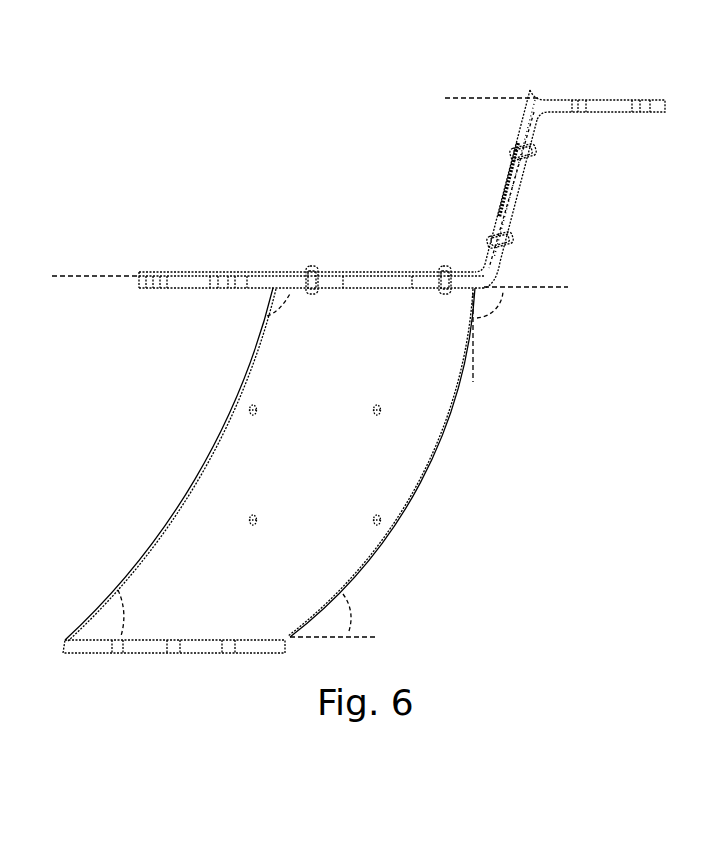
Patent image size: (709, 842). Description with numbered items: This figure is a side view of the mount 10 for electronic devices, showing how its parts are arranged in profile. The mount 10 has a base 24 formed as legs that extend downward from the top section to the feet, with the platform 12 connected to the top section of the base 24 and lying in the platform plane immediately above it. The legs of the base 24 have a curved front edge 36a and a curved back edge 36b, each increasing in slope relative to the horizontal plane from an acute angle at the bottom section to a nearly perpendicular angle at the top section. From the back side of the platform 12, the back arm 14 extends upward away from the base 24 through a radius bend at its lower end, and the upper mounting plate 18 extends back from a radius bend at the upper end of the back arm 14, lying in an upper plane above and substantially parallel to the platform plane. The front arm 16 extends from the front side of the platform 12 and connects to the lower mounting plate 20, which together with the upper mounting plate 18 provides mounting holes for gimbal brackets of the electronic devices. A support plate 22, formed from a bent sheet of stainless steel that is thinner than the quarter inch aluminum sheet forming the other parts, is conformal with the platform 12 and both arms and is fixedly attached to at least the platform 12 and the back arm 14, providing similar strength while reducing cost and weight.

The mount 10 is at (161, 172).
The platform 12 is at (330, 278).
The back arm 14 is at (520, 182).
The front arm 16 is at (258, 282).
The upper mounting plate 18 is at (605, 103).
The lower mounting plate 20 is at (187, 280).
The support plate 22 is at (422, 272).
The base 24 is at (452, 465).
The curved front edge 36a is at (400, 515).
The curved back edge 36b is at (175, 513).